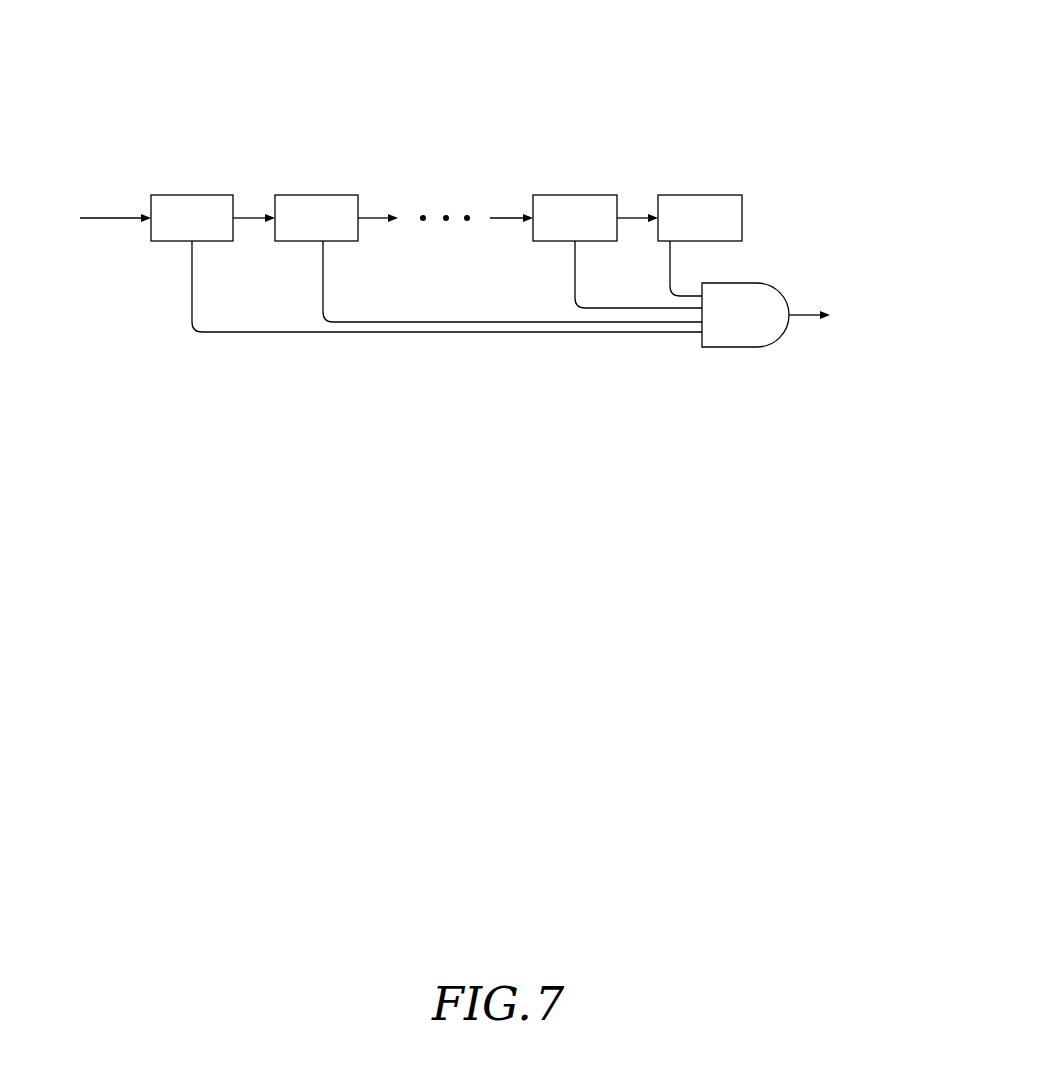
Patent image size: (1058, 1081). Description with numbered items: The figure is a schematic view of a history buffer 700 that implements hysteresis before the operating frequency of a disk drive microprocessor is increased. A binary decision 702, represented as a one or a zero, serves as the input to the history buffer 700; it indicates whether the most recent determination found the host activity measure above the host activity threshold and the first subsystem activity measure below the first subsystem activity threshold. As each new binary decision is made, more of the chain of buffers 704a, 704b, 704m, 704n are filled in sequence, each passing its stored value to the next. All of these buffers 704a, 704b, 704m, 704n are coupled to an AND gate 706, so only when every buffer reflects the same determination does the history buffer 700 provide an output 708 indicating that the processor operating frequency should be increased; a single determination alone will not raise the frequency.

The history buffer 700 is at (689, 88).
The binary decision 702 is at (65, 190).
The buffer 704a is at (197, 195).
The buffer 704b is at (320, 195).
The buffer 704m is at (577, 195).
The buffer 704n is at (700, 195).
The AND gate 706 is at (740, 348).
The output 708 is at (883, 383).